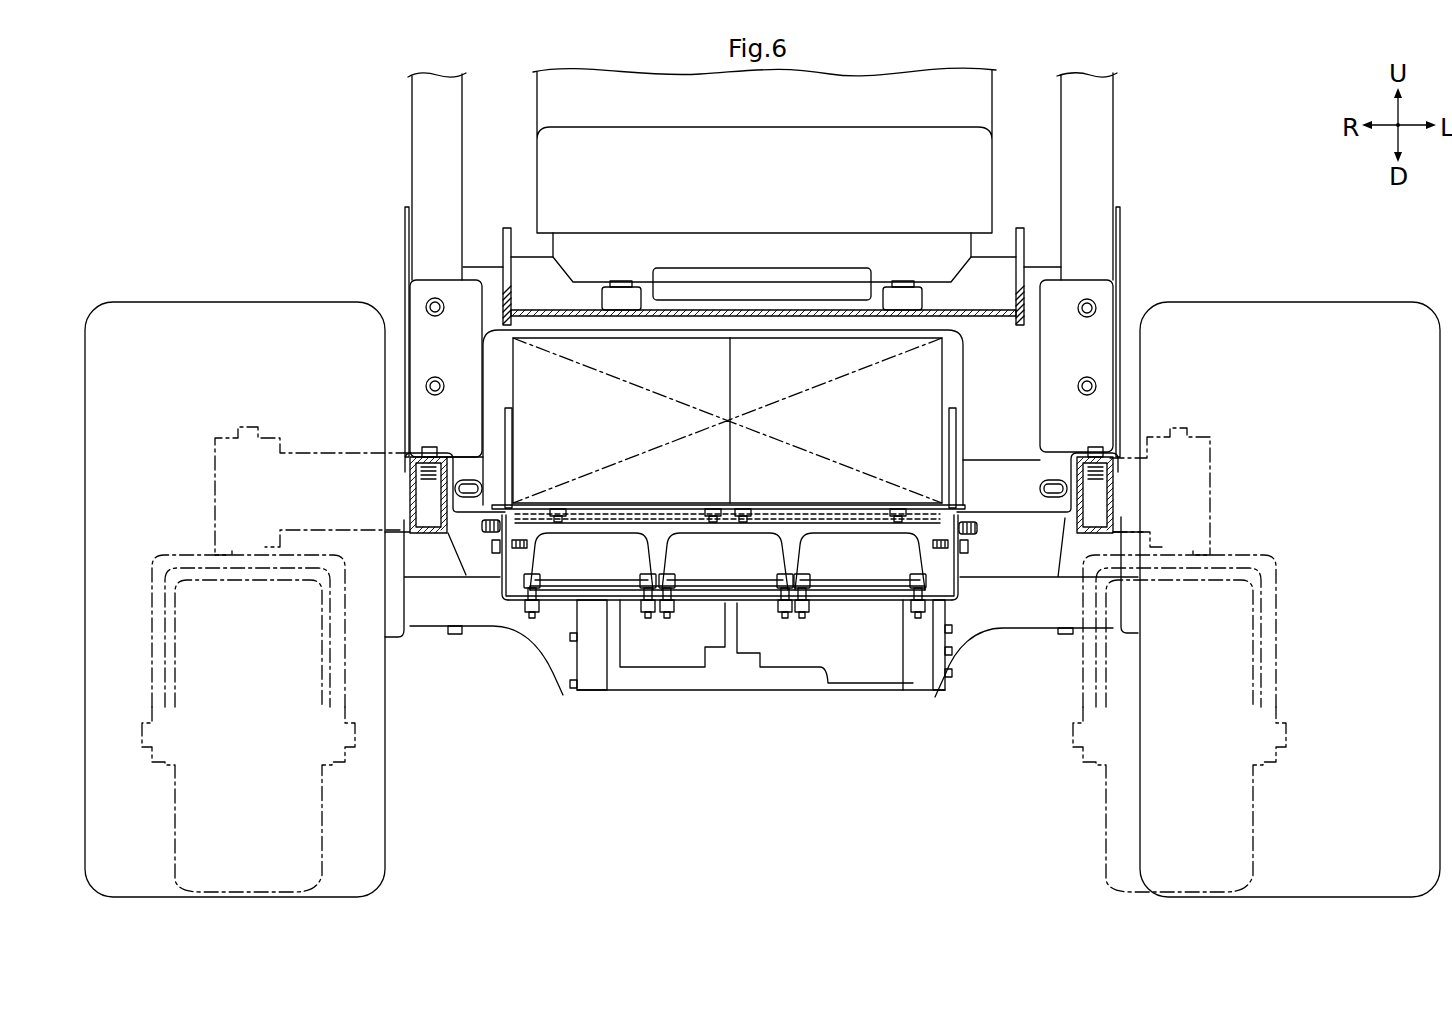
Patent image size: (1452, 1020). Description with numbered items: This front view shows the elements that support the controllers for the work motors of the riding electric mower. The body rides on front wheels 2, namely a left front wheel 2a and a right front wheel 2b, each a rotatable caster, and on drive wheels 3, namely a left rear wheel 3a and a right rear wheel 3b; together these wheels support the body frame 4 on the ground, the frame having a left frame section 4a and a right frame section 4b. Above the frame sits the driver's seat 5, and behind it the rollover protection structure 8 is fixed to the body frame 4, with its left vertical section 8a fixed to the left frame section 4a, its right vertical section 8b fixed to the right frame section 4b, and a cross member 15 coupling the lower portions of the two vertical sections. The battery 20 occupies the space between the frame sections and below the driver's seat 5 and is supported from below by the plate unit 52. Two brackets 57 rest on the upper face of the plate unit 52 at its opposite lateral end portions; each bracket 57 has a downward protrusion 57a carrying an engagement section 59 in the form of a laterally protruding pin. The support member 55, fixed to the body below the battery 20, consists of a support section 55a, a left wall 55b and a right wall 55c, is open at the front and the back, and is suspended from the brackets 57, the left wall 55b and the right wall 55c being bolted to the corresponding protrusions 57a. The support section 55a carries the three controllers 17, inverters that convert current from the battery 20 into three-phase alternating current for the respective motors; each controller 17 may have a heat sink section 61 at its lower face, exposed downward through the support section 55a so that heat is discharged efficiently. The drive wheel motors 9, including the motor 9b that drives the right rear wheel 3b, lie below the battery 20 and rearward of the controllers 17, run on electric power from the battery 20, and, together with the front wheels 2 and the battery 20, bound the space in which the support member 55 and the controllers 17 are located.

The front wheels 2 is at (714, 659).
The left front wheel 2a is at (1103, 832).
The right front wheel 2b is at (328, 817).
The drive wheels 3 is at (762, 575).
The left rear wheel 3a is at (1298, 302).
The right rear wheel 3b is at (203, 302).
The body frame 4 is at (760, 490).
The left frame section 4a is at (1113, 497).
The right frame section 4b is at (410, 492).
The driver's seat 5 is at (990, 106).
The rollover protection structure 8 is at (764, 265).
The left vertical section 8a is at (1112, 112).
The right vertical section 8b is at (420, 111).
The drive wheel motors 9 is at (764, 632).
The motor 9b is at (966, 663).
The cross member 15 is at (1043, 268).
The controllers 17 is at (862, 548).
The battery 20 is at (798, 357).
The plate unit 52 is at (602, 507).
The support member 55 is at (738, 604).
The support section 55a is at (753, 590).
The left wall 55b is at (960, 580).
The right wall 55c is at (500, 583).
The bracket 57 is at (500, 467).
The downward protrusion 57a is at (510, 555).
The engagement section 59 is at (976, 522).
The heat sink section 61 is at (873, 590).